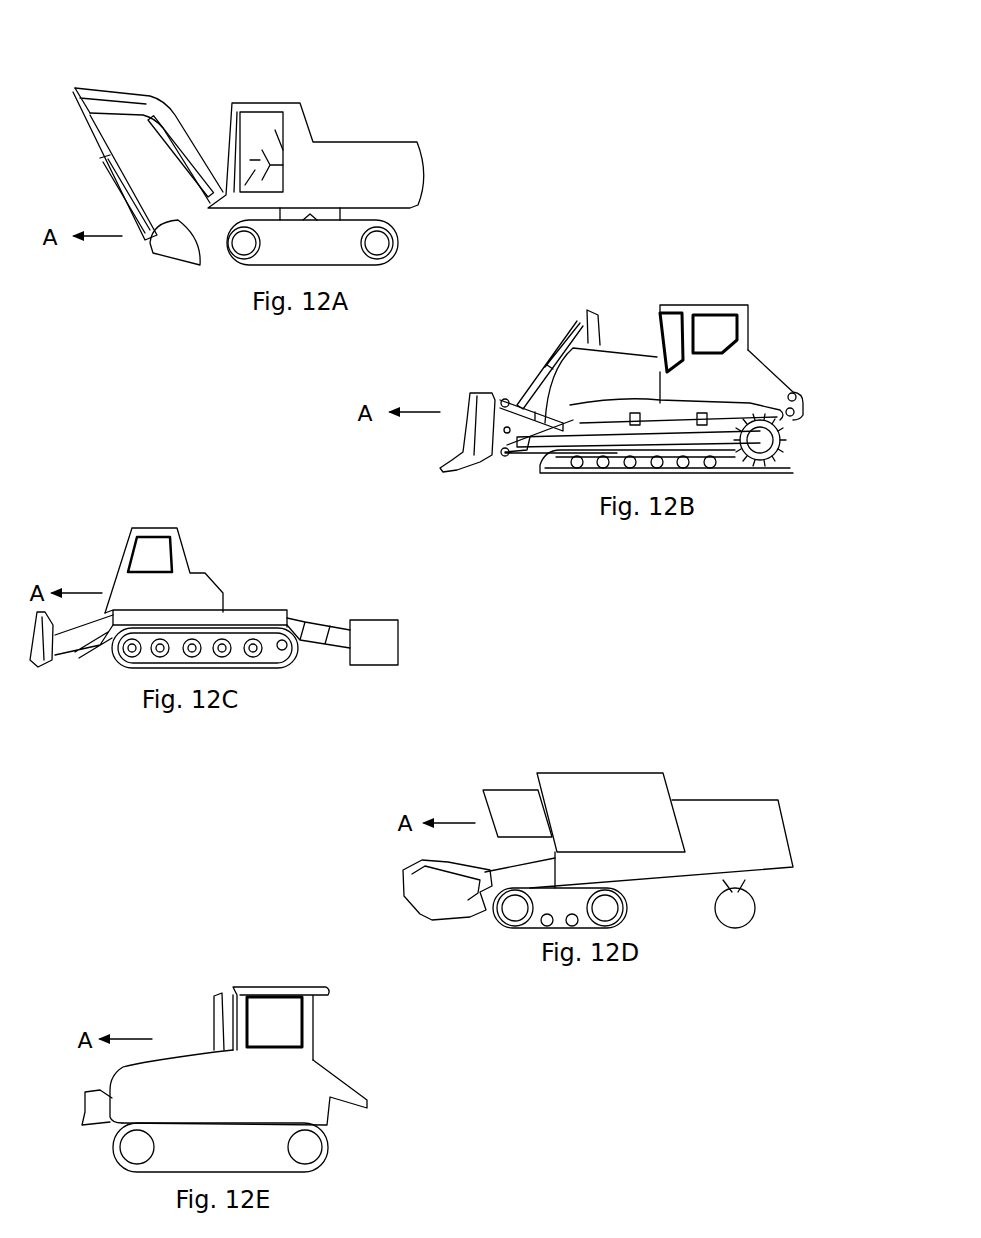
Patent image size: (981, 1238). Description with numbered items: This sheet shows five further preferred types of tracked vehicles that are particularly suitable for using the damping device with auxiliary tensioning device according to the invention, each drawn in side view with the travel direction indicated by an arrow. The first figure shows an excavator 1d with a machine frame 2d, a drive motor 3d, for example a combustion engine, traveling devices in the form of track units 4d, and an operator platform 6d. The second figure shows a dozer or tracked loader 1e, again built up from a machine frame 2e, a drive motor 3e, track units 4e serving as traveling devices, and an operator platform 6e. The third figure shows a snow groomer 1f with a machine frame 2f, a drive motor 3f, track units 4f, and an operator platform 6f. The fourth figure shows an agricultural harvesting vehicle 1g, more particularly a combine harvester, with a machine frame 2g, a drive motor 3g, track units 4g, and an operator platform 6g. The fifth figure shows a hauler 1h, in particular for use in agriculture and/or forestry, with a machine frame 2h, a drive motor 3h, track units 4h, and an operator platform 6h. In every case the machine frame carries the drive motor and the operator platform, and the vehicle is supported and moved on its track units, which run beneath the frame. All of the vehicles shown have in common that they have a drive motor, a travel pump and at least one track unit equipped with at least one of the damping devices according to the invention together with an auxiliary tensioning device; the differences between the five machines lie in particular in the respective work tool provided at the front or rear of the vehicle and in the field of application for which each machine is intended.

In FIG. 12A, the excavator 1d is at (387, 121).
In FIG. 12A, the machine frame 2d is at (403, 203).
In FIG. 12A, the drive motor 3d is at (380, 183).
In FIG. 12A, the track units 4d is at (353, 257).
In FIG. 12A, the operator platform 6d is at (250, 122).
In FIG. 12B, the dozer or tracked loader 1e is at (631, 321).
In FIG. 12B, the machine frame 2e is at (763, 398).
In FIG. 12B, the drive motor 3e is at (598, 382).
In FIG. 12B, the track units 4e is at (728, 470).
In FIG. 12B, the operator platform 6e is at (672, 333).
In FIG. 12C, the snow groomer 1f is at (261, 568).
In FIG. 12C, the machine frame 2f is at (140, 602).
In FIG. 12C, the drive motor 3f is at (195, 597).
In FIG. 12C, the track units 4f is at (247, 653).
In FIG. 12C, the operator platform 6f is at (150, 553).
In FIG. 12D, the agricultural harvesting vehicle 1g is at (647, 751).
In FIG. 12D, the machine frame 2g is at (688, 872).
In FIG. 12D, the drive motor 3g is at (575, 810).
In FIG. 12D, the track units 4g is at (523, 913).
In FIG. 12D, the operator platform 6g is at (520, 802).
In FIG. 12E, the hauler 1h is at (261, 955).
In FIG. 12E, the machine frame 2h is at (302, 1102).
In FIG. 12E, the drive motor 3h is at (197, 1082).
In FIG. 12E, the track units 4h is at (310, 1150).
In FIG. 12E, the operator platform 6h is at (280, 1007).